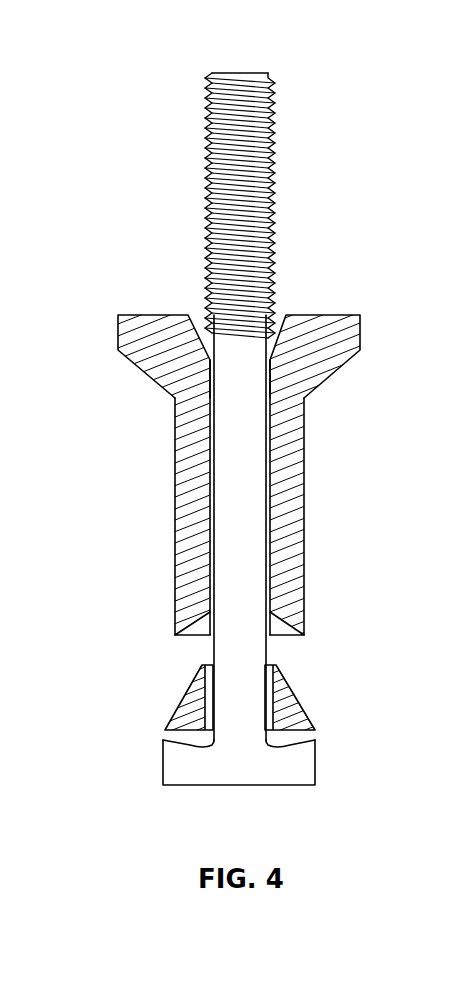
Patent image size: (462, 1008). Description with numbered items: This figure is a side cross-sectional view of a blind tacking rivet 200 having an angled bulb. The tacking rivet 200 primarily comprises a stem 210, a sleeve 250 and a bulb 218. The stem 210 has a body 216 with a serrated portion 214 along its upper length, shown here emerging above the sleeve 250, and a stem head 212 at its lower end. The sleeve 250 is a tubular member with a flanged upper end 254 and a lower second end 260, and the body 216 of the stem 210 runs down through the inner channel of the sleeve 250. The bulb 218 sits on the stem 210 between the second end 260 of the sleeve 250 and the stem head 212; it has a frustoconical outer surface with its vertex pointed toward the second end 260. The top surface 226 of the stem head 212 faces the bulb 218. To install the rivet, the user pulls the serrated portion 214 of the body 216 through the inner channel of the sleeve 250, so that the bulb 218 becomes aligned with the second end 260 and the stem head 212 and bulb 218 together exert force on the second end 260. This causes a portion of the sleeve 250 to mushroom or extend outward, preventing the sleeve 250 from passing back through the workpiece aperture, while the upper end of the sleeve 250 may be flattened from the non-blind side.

The tacking rivet 200 is at (124, 79).
The stem 210 is at (182, 156).
The serrated portion 214 is at (258, 166).
The body 216 is at (248, 449).
The stem head 212 is at (303, 768).
The head upper surface 226 is at (168, 737).
The sleeve 250 is at (322, 507).
The flange 254 is at (355, 315).
The second end 260 is at (283, 615).
The bulb 218 is at (288, 672).